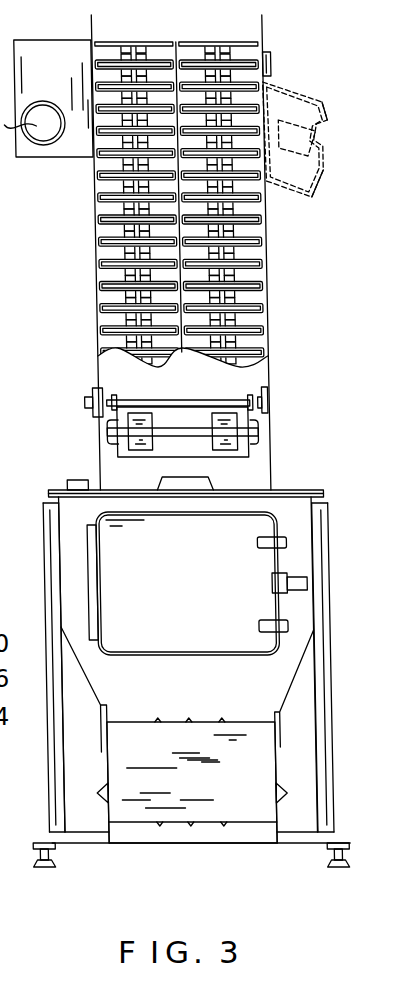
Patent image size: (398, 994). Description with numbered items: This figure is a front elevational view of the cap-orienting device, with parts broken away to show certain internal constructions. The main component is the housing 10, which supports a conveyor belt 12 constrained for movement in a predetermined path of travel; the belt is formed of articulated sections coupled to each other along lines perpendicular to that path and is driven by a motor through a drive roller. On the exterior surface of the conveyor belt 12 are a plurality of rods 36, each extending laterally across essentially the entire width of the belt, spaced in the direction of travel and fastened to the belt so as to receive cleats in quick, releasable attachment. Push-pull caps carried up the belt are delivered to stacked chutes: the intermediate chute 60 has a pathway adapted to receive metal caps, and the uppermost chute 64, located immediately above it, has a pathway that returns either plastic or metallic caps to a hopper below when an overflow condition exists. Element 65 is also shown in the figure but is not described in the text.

The housing 10 is at (34, 560).
The conveyor belt 12 is at (91, 268).
The rods 36 is at (256, 240).
The intermediate chute 60 is at (50, 52).
The uppermost chute 64 is at (56, 625).
The access door 65 is at (310, 100).